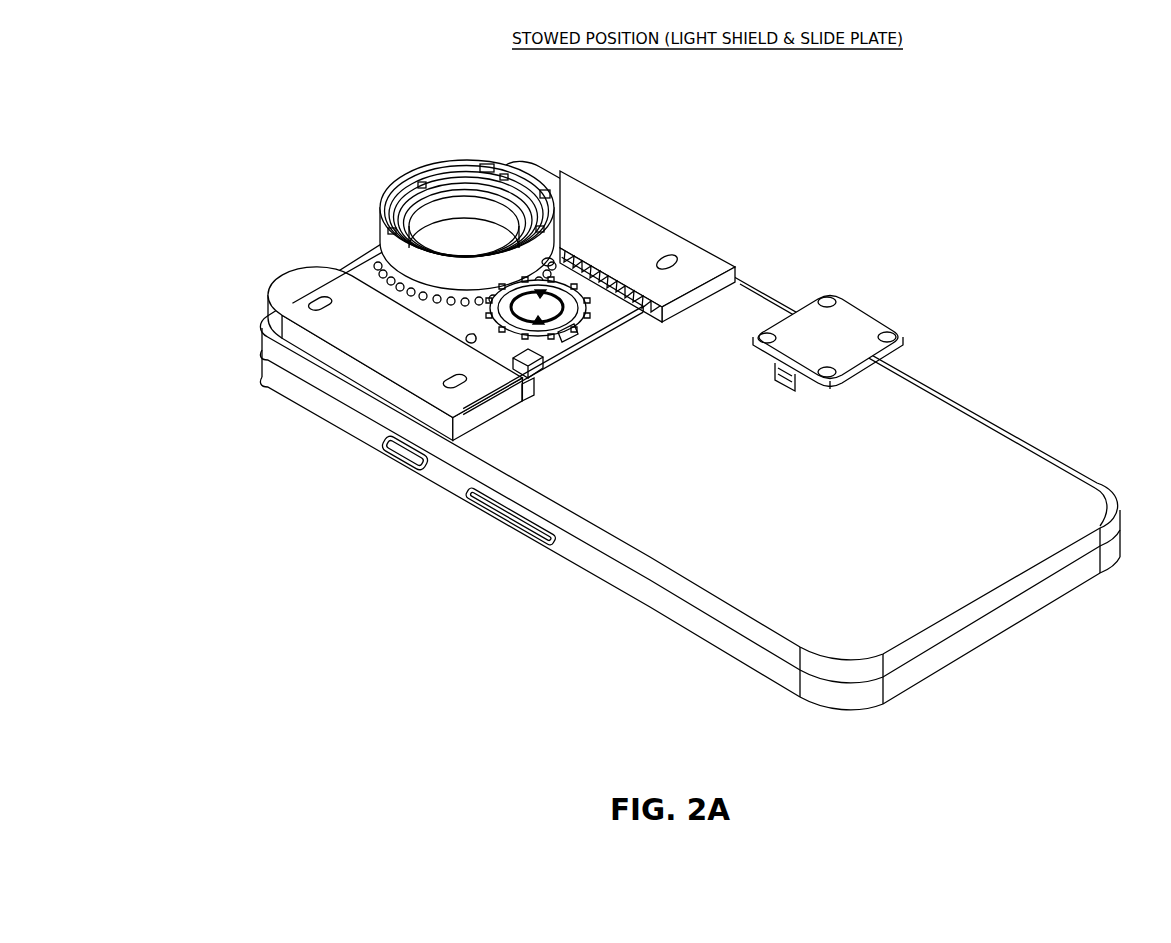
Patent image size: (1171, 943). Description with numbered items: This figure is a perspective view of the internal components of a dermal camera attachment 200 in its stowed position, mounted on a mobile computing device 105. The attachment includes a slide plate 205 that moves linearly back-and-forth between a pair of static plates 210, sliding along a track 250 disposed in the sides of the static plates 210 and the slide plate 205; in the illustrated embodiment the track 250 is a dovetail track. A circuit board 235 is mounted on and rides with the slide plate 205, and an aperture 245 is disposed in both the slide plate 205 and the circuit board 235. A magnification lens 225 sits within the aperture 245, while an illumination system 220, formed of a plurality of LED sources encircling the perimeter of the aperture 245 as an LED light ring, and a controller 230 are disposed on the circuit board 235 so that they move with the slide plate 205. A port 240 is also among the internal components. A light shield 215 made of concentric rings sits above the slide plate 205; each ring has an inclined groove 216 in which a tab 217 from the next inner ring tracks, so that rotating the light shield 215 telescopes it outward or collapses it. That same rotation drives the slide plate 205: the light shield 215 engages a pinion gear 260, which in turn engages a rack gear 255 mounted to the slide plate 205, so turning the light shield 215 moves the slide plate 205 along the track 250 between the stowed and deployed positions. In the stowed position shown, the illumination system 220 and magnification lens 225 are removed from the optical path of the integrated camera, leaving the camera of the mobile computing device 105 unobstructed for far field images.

The mobile computing device 105 is at (843, 690).
The dermal camera attachment 200 is at (268, 137).
The slide plate 205 is at (630, 325).
The static plates 210 is at (296, 467).
The light shield 215 is at (427, 168).
The inclined groove 216 is at (381, 250).
The tab 217 is at (482, 166).
The illumination system 220 is at (557, 344).
The magnification lens 225 is at (580, 338).
The controller 230 is at (512, 375).
The circuit board 235 is at (574, 345).
The port 240 is at (808, 347).
The aperture 245 is at (548, 258).
The track 250 is at (747, 283).
The rack gear 255 is at (593, 263).
The pinion gear 260 is at (458, 306).